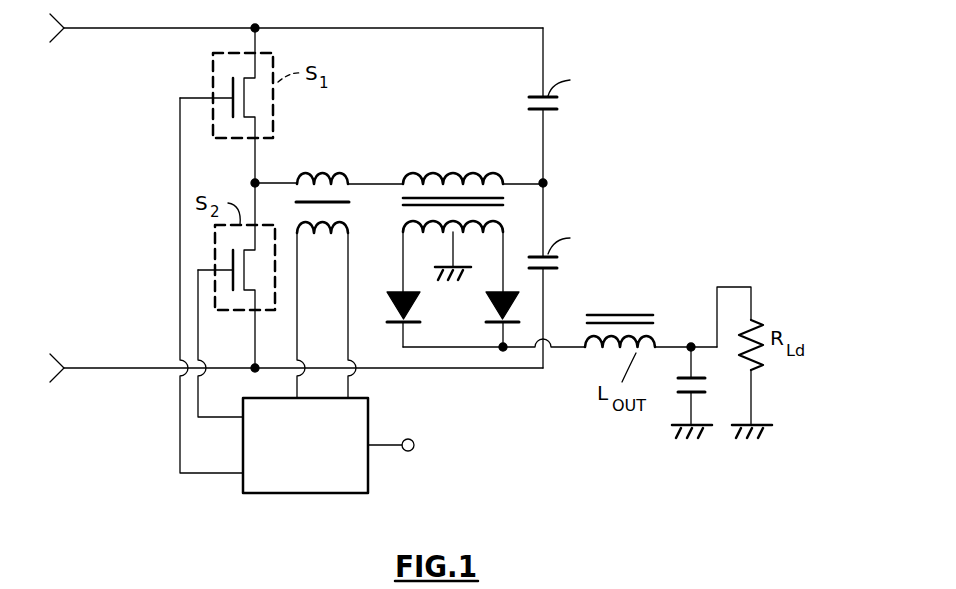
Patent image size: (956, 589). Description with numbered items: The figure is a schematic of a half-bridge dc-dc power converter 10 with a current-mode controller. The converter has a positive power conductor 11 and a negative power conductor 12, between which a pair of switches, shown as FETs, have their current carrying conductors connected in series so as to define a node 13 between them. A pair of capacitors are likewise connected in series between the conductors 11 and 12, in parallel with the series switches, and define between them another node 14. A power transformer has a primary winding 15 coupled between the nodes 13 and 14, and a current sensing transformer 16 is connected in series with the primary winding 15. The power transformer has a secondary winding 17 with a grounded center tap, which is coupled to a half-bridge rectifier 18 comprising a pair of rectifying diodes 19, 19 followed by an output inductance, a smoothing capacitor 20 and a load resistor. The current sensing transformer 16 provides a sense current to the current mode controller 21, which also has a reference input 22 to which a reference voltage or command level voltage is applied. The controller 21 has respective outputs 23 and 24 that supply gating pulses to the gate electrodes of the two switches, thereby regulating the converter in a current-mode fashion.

The half-bridge dc-dc power converter 10 is at (134, 214).
The positive power conductor 11 is at (168, 28).
The negative power conductor 12 is at (170, 368).
The node 13 is at (254, 181).
The node 14 is at (545, 181).
The primary winding 15 is at (472, 172).
The current sensing transformer 16 is at (337, 172).
The secondary winding 17 is at (501, 222).
The half-bridge rectifier 18 is at (505, 350).
The rectifying diodes 19 is at (392, 304).
The smoothing capacitor 20 is at (703, 386).
The current mode controller 21 is at (344, 478).
The reference input 22 is at (410, 452).
The output 23 is at (238, 478).
The output 24 is at (238, 420).